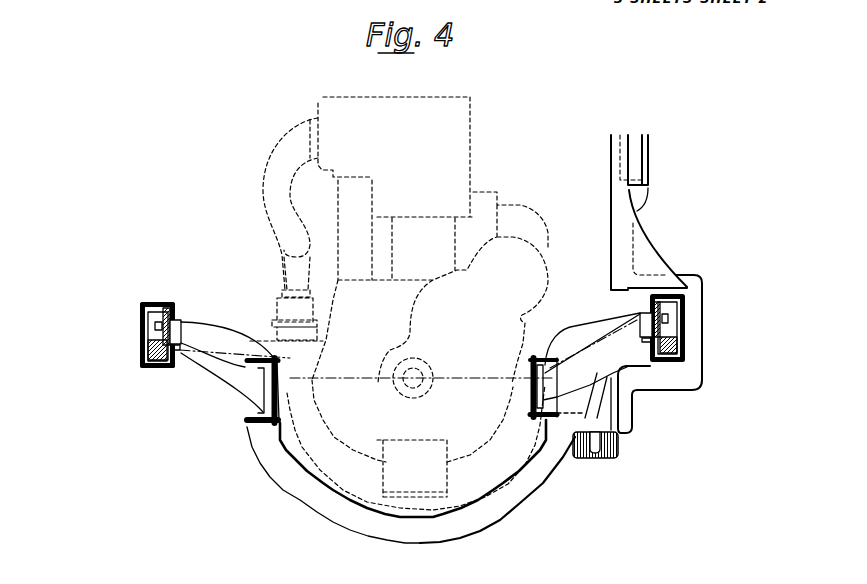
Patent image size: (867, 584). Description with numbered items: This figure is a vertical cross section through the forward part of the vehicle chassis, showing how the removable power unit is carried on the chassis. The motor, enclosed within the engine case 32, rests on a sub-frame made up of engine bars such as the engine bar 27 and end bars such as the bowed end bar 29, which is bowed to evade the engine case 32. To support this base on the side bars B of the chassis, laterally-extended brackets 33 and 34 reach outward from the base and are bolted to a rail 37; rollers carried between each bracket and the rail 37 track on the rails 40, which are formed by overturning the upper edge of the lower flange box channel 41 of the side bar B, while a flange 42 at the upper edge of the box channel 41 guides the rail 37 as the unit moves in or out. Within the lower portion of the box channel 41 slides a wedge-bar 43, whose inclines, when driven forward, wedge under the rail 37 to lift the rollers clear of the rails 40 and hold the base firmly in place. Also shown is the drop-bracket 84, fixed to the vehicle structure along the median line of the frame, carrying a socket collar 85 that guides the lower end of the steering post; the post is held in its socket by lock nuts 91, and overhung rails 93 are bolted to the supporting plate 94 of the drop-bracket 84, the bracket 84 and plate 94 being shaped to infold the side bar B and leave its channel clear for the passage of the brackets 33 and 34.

The lock nuts 91 is at (458, 140).
The engine case 32 is at (483, 487).
The end bar 29 is at (387, 527).
The rail 37 is at (140, 313).
The side bar B is at (143, 348).
The box channel 41 is at (143, 360).
The flange 42 is at (173, 312).
The wedge-bar 43 is at (160, 370).
The rail 40 is at (178, 350).
The bracket 33 is at (237, 332).
The bracket 34 is at (602, 342).
The engine bar 27 is at (253, 413).
The overhung rail 93 is at (618, 198).
The supporting plate 94 is at (642, 200).
The drop-bracket 84 is at (608, 415).
The socket collar 85 is at (615, 456).